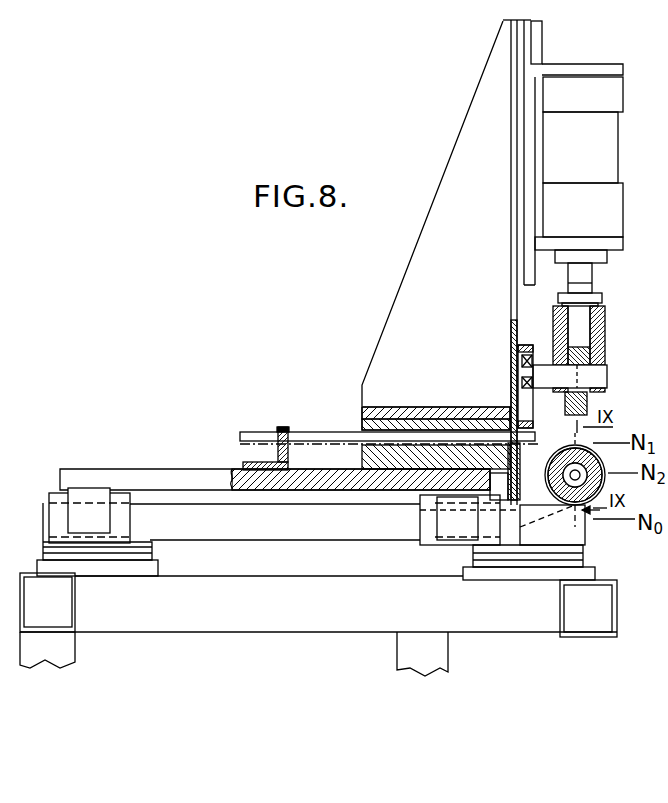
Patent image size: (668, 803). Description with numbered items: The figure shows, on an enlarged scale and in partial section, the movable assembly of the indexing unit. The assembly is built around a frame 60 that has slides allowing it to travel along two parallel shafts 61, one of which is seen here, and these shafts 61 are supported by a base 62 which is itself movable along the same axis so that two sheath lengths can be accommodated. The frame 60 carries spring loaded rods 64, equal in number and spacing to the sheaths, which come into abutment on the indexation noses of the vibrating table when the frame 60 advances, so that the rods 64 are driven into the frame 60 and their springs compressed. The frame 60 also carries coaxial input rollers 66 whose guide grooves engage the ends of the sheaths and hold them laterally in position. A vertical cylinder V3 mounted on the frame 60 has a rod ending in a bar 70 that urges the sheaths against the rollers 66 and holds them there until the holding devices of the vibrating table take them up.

The frame 60 is at (402, 318).
The shaft 61 is at (207, 523).
The base 62 is at (197, 607).
The spring loaded rod 64 is at (320, 437).
The input roller 66 is at (567, 447).
The bar 70 is at (590, 400).
The vertical cylinder V3 is at (588, 168).